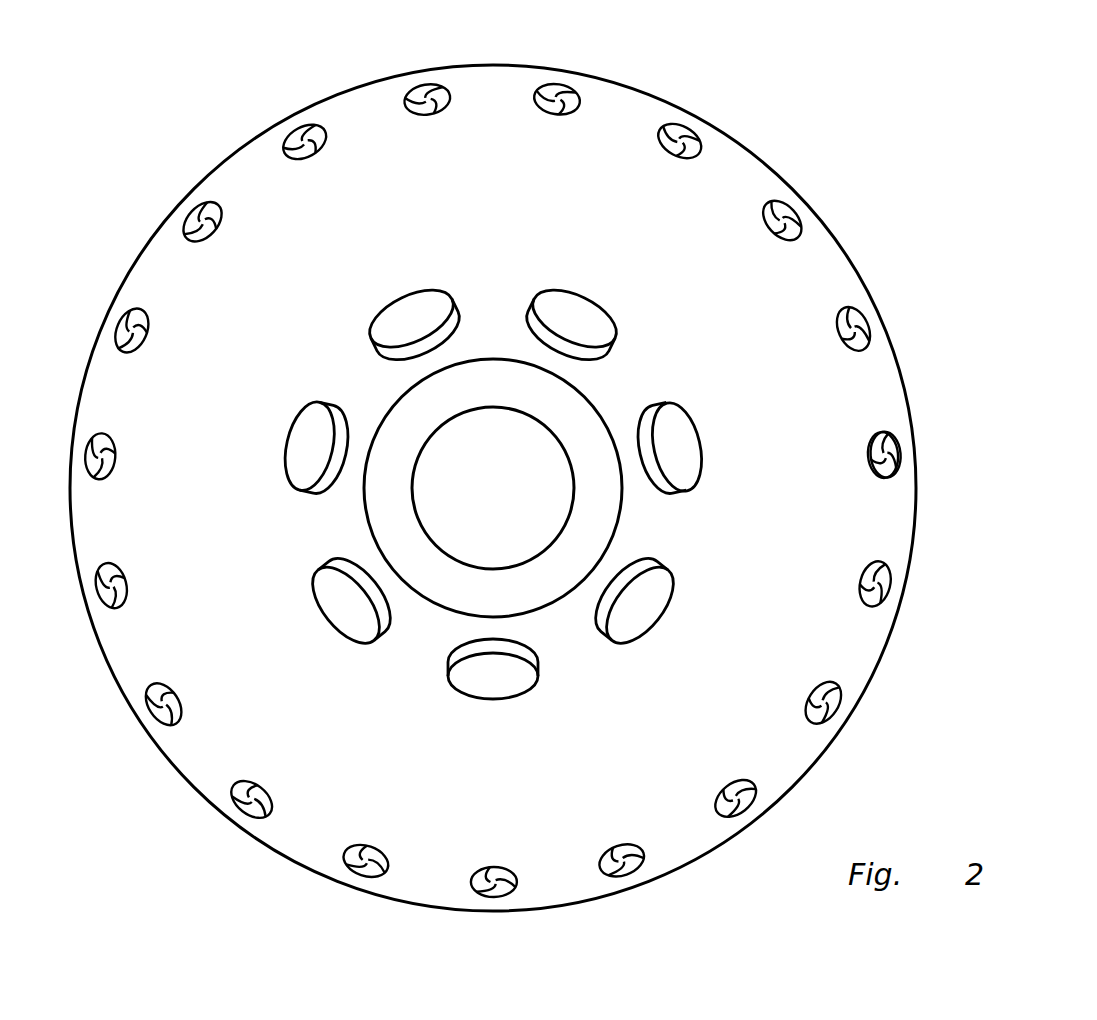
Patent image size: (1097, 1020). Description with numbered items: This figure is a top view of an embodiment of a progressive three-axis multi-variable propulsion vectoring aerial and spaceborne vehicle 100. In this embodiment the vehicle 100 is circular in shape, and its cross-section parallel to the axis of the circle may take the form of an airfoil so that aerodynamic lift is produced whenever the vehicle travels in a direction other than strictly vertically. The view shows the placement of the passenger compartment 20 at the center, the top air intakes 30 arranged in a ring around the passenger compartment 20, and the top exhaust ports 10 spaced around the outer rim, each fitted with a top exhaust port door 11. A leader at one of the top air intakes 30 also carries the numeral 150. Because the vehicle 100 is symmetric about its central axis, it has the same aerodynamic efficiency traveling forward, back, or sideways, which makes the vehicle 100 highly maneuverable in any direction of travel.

The progressive 3-axis multi-variable propulsion vectoring aerial and spaceborne veh 100 is at (848, 173).
The passenger compartment 20 is at (485, 407).
The top air intakes 30 is at (684, 411).
The boss face 150 is at (677, 450).
The top exhaust ports 10 is at (883, 433).
The top exhaust port doors 11 is at (883, 478).